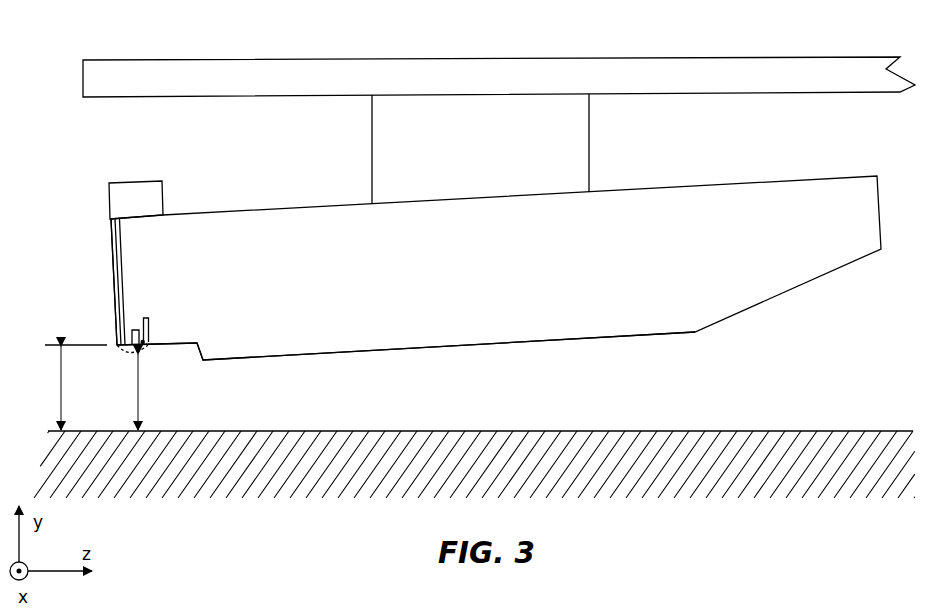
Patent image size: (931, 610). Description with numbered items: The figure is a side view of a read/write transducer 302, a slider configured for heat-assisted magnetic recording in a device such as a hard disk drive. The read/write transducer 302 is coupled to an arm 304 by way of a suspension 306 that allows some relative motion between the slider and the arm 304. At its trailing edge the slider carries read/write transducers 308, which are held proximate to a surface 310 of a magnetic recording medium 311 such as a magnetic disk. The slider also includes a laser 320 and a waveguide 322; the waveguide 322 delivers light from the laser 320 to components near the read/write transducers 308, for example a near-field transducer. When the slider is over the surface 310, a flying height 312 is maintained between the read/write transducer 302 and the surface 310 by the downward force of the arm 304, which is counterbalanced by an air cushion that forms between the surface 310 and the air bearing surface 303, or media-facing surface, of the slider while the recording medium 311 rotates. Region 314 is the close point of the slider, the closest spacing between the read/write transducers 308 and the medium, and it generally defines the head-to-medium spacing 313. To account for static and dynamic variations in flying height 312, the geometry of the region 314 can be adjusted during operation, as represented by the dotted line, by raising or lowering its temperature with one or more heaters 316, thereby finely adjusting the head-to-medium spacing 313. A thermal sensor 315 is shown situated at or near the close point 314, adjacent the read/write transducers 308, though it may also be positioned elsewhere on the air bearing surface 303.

The read/write transducer 302 is at (748, 195).
The air bearing surface 303 is at (318, 352).
The arm 304 is at (812, 68).
The suspension 306 is at (588, 140).
The read/write transducers 308 is at (132, 332).
The surface 310 is at (753, 430).
The magnetic recording medium 311 is at (772, 483).
The flying height 312 is at (58, 387).
The head-to-medium spacing 313 is at (115, 392).
The region (close point) 314 is at (147, 353).
The thermal sensor 315 is at (145, 342).
The heaters 316 is at (146, 323).
The laser 320 is at (137, 193).
The waveguide 322 is at (115, 250).